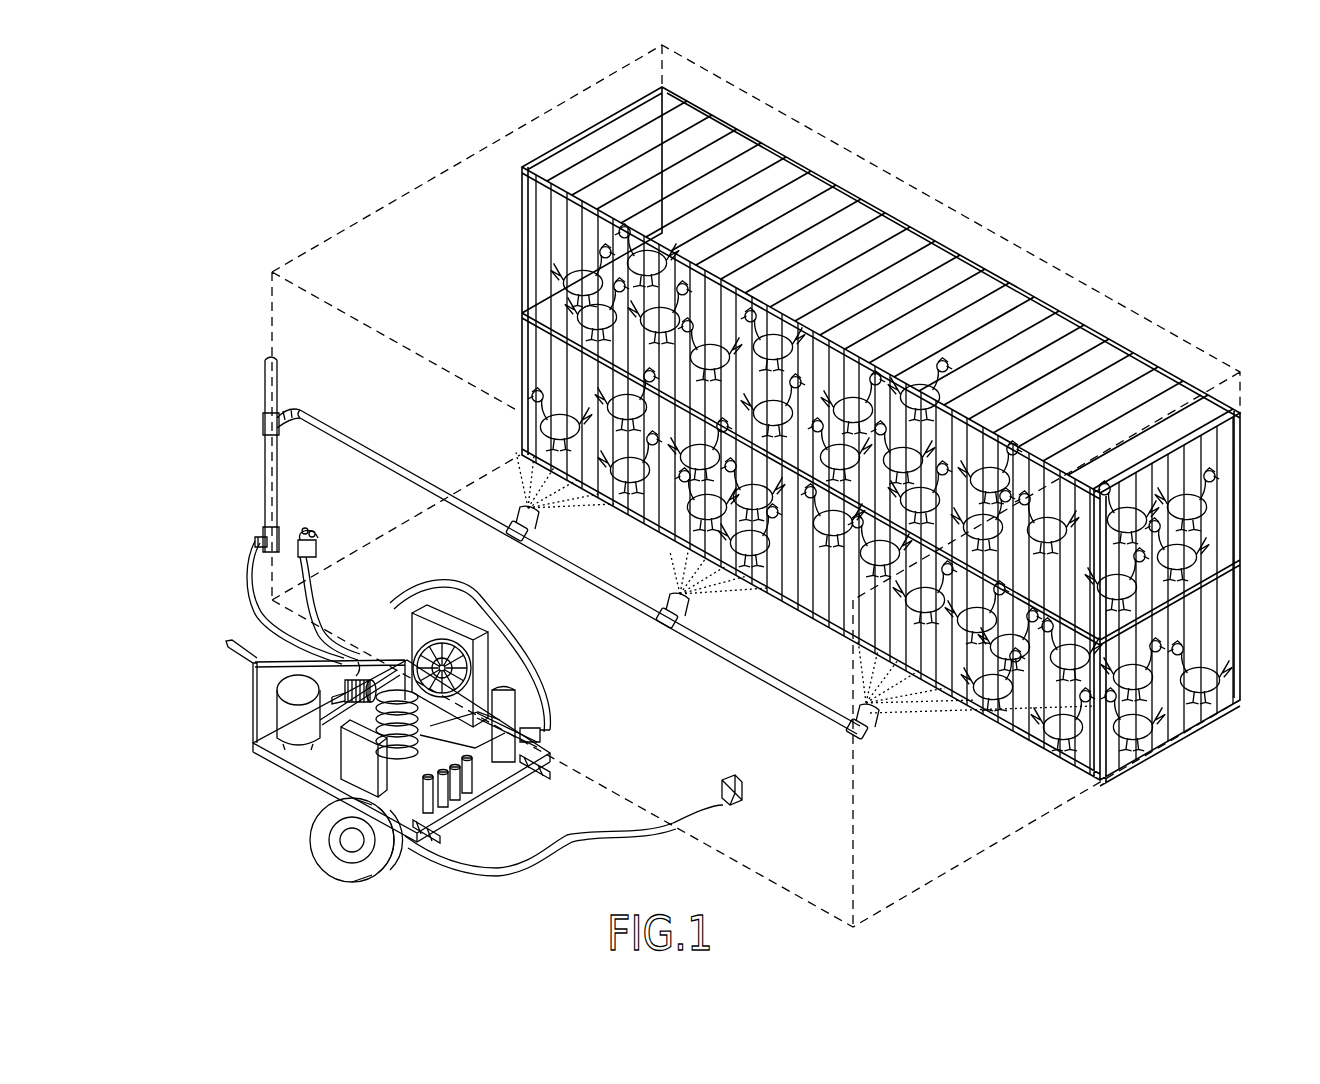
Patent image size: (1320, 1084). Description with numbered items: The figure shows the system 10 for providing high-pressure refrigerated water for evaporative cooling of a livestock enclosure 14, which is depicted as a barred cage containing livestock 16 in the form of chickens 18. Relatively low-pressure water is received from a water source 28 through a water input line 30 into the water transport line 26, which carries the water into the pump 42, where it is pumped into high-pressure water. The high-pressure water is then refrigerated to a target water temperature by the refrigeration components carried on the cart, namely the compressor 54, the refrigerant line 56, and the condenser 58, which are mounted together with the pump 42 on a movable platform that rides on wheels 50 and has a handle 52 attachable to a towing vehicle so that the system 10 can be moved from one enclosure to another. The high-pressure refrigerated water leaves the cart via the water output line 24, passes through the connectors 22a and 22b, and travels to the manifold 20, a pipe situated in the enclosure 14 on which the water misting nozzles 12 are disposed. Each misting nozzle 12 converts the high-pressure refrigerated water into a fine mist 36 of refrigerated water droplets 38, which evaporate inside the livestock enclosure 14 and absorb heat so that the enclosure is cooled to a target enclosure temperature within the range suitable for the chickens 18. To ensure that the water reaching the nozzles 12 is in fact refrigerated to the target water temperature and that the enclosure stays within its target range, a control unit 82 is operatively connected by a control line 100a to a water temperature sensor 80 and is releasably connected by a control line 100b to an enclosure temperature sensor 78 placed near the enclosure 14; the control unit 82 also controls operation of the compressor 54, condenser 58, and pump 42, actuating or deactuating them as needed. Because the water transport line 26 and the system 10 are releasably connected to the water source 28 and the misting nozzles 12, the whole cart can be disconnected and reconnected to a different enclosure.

The system 10 is at (190, 623).
The water misting nozzles 12 is at (545, 520).
The livestock enclosure 14 is at (972, 858).
The livestock 16 is at (1170, 638).
The chickens 18 is at (1237, 492).
The manifold 20 is at (266, 478).
The pipe connector 22a is at (259, 540).
The hose connector 22b is at (318, 555).
The water output line 24 is at (251, 581).
The water transport line 26 is at (505, 775).
The water source 28 is at (298, 533).
The water input line 30 is at (418, 580).
The mist 36 is at (935, 722).
The water droplets 38 is at (845, 678).
The pump 42 is at (428, 750).
The wheels 50 is at (322, 845).
The handle 52 is at (227, 658).
The compressor 54 is at (287, 740).
The refrigerant line 56 is at (468, 782).
The condenser 58 is at (435, 612).
The enclosure temperature sensor 78 is at (723, 782).
The water temperature sensor 80 is at (380, 668).
The control unit 82 is at (343, 770).
The control line 100a is at (358, 662).
The control line 100b is at (497, 880).